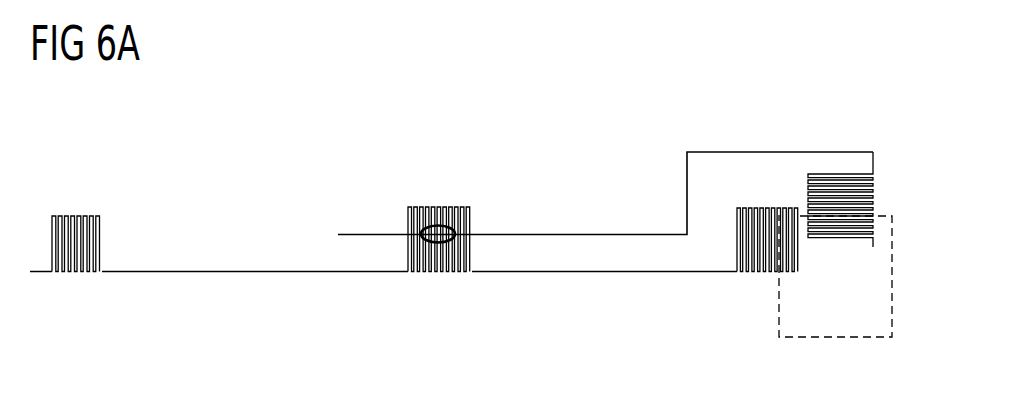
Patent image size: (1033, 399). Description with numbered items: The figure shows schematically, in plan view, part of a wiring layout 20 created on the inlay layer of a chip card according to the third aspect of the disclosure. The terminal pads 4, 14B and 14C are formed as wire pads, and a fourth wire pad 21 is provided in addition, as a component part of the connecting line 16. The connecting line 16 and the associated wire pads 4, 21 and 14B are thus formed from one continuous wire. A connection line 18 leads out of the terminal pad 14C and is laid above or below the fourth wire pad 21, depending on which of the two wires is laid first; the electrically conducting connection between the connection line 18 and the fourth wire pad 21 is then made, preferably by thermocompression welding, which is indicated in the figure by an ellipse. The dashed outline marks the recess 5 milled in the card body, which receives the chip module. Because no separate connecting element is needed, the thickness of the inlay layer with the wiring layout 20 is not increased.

The terminal pad 4 is at (86, 240).
The connecting line 16 is at (292, 271).
The connection line 18 is at (604, 234).
The wiring layout 20 is at (291, 142).
The fourth wire pad 21 is at (424, 207).
The terminal pad 14B is at (757, 258).
The terminal pad 14C is at (838, 186).
The recess 5 is at (840, 338).